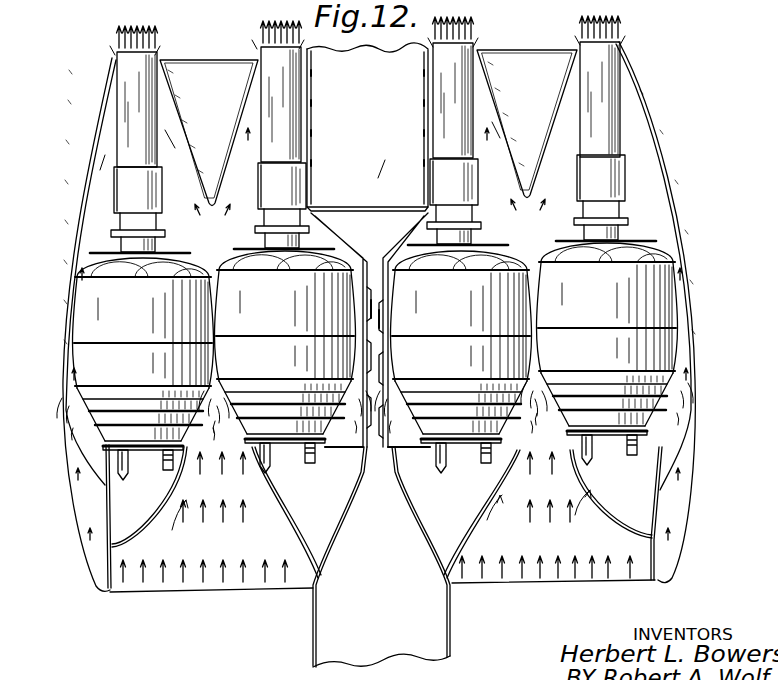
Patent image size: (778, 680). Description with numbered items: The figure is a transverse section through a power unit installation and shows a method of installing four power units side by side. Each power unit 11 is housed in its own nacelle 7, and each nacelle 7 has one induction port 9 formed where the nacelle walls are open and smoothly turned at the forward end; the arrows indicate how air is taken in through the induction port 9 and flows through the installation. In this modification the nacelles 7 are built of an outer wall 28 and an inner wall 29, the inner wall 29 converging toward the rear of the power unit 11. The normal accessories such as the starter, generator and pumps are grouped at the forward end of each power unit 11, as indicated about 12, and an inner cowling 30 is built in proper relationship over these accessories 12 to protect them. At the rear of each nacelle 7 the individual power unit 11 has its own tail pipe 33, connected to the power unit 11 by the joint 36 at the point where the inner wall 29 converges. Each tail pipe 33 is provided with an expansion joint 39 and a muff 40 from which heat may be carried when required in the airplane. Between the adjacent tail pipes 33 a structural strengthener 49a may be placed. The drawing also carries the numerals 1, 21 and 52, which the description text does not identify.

The central exhaust nozzle 1 is at (320, 637).
The cooling air passage between shell walls 7 is at (95, 547).
The air inlet floor 9 is at (230, 592).
The combustion chamber / engine unit 11 is at (375, 346).
The igniter / fuel nozzle 12 is at (150, 457).
The valve element in central duct 21 is at (363, 307).
The outer shell wall 28 is at (62, 390).
The central duct 29 is at (382, 267).
The bell-shaped exhaust duct wall 30 is at (165, 509).
The exhaust stack 33 is at (122, 75).
The mounting plate 36 is at (583, 226).
The stack collar flange 39 is at (266, 231).
The stack housing box 40 is at (369, 184).
The triangular partition 49a is at (368, 133).
The central compartment 52 is at (367, 127).